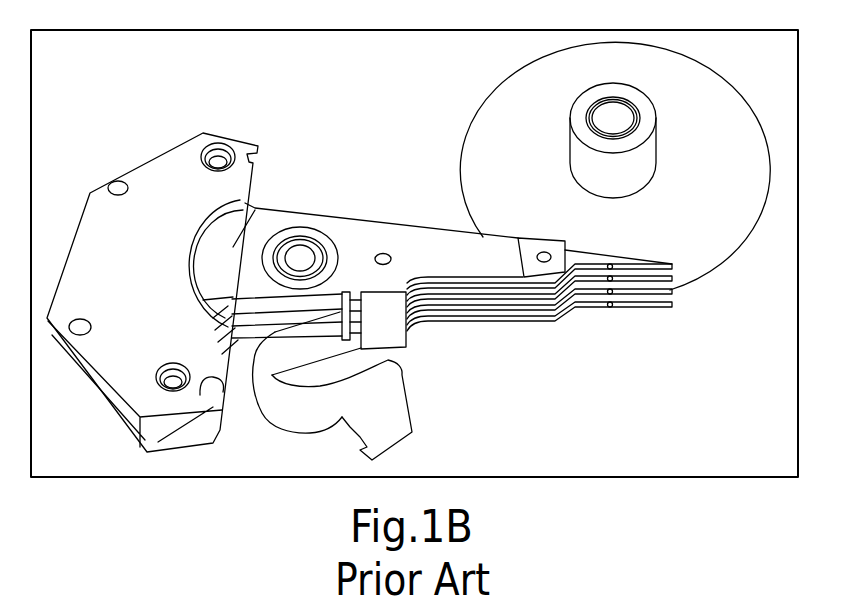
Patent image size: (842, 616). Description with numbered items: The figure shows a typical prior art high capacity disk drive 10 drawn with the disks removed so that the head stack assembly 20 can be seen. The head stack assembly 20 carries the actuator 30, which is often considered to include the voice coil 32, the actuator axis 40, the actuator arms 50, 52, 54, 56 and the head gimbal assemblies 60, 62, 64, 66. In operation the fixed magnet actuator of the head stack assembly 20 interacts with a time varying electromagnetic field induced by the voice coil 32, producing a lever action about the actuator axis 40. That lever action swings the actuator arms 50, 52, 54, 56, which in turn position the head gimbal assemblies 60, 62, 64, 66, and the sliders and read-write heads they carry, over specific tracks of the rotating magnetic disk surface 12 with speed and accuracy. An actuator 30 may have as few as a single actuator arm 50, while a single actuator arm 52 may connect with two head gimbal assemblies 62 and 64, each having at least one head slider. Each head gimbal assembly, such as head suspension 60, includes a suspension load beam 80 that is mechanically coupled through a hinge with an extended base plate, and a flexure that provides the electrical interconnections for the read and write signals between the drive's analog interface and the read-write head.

The high capacity disk drive 10 is at (326, 82).
The rotating magnetic disk surface 12 is at (696, 80).
The head stack assembly 20 is at (165, 173).
The actuator 30 is at (537, 237).
The voice coil 32 is at (217, 270).
The actuator axis 40 is at (302, 254).
The actuator arm 50 is at (463, 245).
The actuator arm 52 is at (527, 298).
The actuator arm 54 is at (496, 312).
The actuator arm 56 is at (470, 324).
The head gimbal assembly 60 is at (647, 263).
The head gimbal assembly 62 is at (668, 285).
The head gimbal assembly 64 is at (657, 298).
The head gimbal assembly 66 is at (640, 302).
The suspension load beam 80 is at (650, 152).